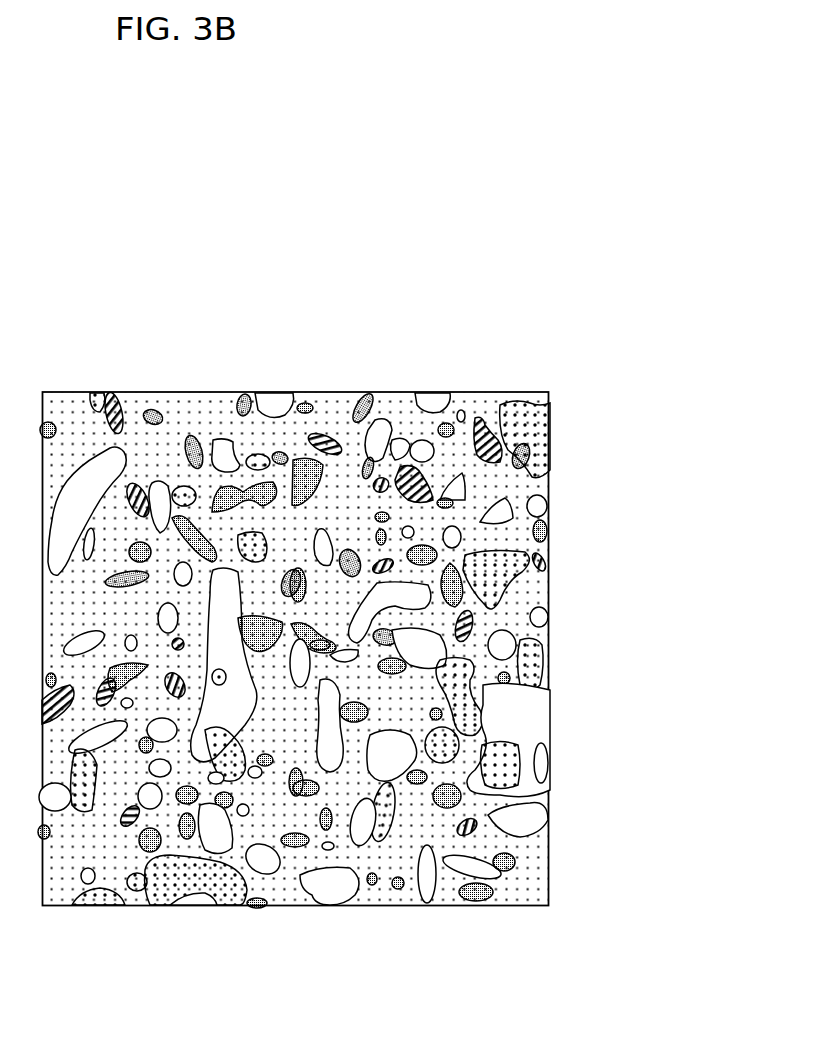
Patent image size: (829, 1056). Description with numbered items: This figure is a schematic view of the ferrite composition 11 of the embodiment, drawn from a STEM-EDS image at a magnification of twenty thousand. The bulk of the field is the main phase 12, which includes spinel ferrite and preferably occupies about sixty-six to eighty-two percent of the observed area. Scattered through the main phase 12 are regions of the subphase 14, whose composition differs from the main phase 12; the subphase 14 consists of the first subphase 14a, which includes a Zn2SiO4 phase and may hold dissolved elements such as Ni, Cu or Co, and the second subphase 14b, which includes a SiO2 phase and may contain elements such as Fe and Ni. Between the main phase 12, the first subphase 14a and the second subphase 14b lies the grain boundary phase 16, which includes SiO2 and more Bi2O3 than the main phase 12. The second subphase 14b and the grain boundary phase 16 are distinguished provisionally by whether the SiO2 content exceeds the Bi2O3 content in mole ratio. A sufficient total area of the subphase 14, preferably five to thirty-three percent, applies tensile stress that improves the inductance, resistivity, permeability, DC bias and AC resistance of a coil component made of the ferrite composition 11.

The ferrite composition 11 is at (545, 361).
The main phase 12 is at (293, 527).
The subphase 14 is at (723, 582).
The first subphase 14a is at (546, 572).
The second subphase 14b is at (180, 648).
The grain boundary phase 16 is at (287, 785).